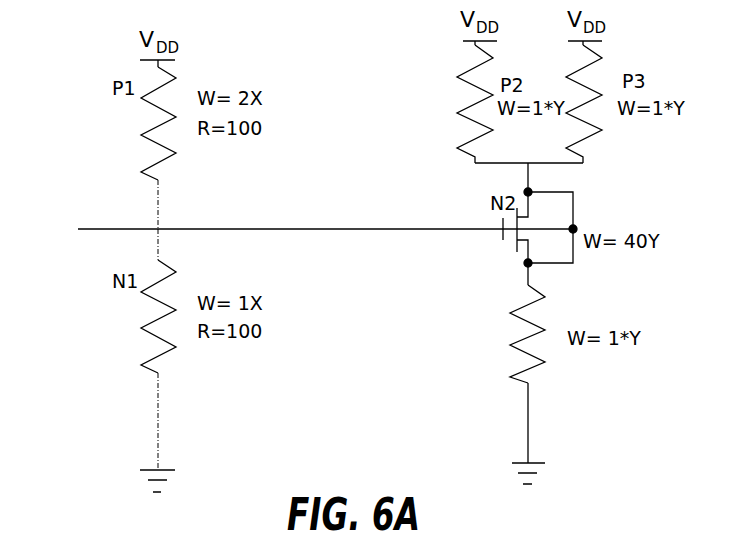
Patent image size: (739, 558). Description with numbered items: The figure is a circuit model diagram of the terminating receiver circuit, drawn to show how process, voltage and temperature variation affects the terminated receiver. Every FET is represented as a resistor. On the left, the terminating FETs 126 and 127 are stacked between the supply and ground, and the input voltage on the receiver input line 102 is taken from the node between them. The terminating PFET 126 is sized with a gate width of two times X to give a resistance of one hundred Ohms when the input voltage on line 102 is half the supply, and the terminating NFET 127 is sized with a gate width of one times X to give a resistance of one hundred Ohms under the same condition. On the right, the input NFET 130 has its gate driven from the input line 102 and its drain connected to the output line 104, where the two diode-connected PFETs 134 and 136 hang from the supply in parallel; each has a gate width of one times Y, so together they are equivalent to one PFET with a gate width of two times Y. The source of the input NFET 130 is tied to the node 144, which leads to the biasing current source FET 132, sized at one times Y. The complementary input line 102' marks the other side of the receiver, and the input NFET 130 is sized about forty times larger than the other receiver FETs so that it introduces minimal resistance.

The receiver input line 102 is at (309, 260).
The receiver input line 102' is at (592, 218).
The output line 104 is at (498, 170).
The terminating FET (P1) 126 is at (150, 150).
The terminating FET (N1) 127 is at (150, 347).
The input NFET (N2) 130 is at (510, 238).
The biasing current source FET (N3) 132 is at (510, 357).
The diode-connected PFET (P2) 134 is at (450, 73).
The diode-connected PFET (P3) 136 is at (610, 73).
The node 144 is at (526, 272).